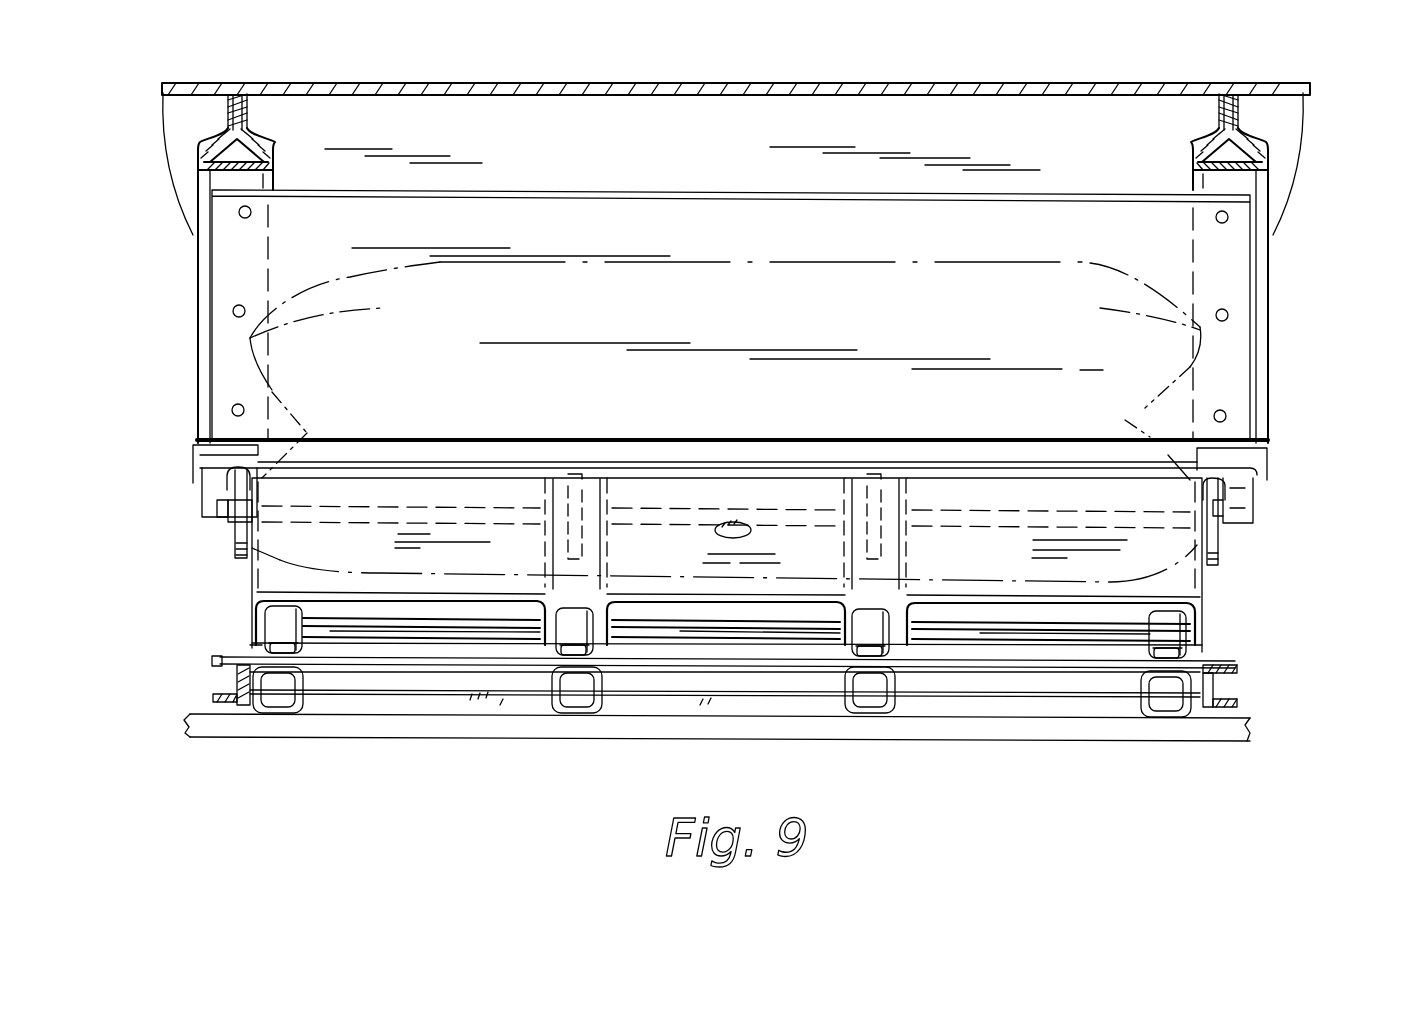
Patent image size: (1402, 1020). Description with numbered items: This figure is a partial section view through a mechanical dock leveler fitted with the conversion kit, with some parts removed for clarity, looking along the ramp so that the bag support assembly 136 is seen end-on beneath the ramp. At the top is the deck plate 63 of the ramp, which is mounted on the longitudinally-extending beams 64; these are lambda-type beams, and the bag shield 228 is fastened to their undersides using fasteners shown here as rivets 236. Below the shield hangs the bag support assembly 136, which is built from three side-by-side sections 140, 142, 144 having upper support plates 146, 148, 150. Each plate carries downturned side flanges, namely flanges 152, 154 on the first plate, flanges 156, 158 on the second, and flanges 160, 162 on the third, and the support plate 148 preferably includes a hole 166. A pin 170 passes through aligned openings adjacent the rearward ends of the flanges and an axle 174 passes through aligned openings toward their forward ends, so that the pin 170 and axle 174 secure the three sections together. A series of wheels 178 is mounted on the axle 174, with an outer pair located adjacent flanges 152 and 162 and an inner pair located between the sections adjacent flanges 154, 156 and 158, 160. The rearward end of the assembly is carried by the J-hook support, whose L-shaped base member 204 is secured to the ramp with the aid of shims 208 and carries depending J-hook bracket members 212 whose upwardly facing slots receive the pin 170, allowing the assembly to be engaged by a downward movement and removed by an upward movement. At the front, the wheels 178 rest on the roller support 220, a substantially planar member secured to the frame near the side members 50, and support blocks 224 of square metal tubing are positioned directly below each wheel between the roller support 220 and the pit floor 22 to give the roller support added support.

The pit floor 22 is at (190, 710).
The side members 50 is at (213, 672).
The deck plate 63 is at (703, 83).
The longitudinally-extending beams 64 is at (205, 183).
The bag support assembly 136 is at (269, 576).
The first section 140 is at (362, 485).
The second section 142 is at (650, 485).
The third section 144 is at (960, 485).
The upper support plate 146 is at (372, 559).
The upper support plate 148 is at (684, 575).
The upper support plate 150 is at (995, 567).
The side flange 152 is at (256, 610).
The side flange 154 is at (545, 605).
The side flange 156 is at (608, 605).
The side flange 158 is at (848, 645).
The side flange 160 is at (900, 645).
The side flange 162 is at (1197, 620).
The hole 166 is at (735, 525).
The pin 170 is at (485, 492).
The axle 174 is at (400, 640).
The wheels 178 is at (296, 652).
The L-shaped base member 204 is at (200, 493).
The shims 208 is at (198, 451).
The J-hook bracket members 212 is at (235, 548).
The roller support 220 is at (222, 658).
The support blocks 224 is at (262, 712).
The bag shield 228 is at (503, 176).
The rivets 236 is at (233, 308).